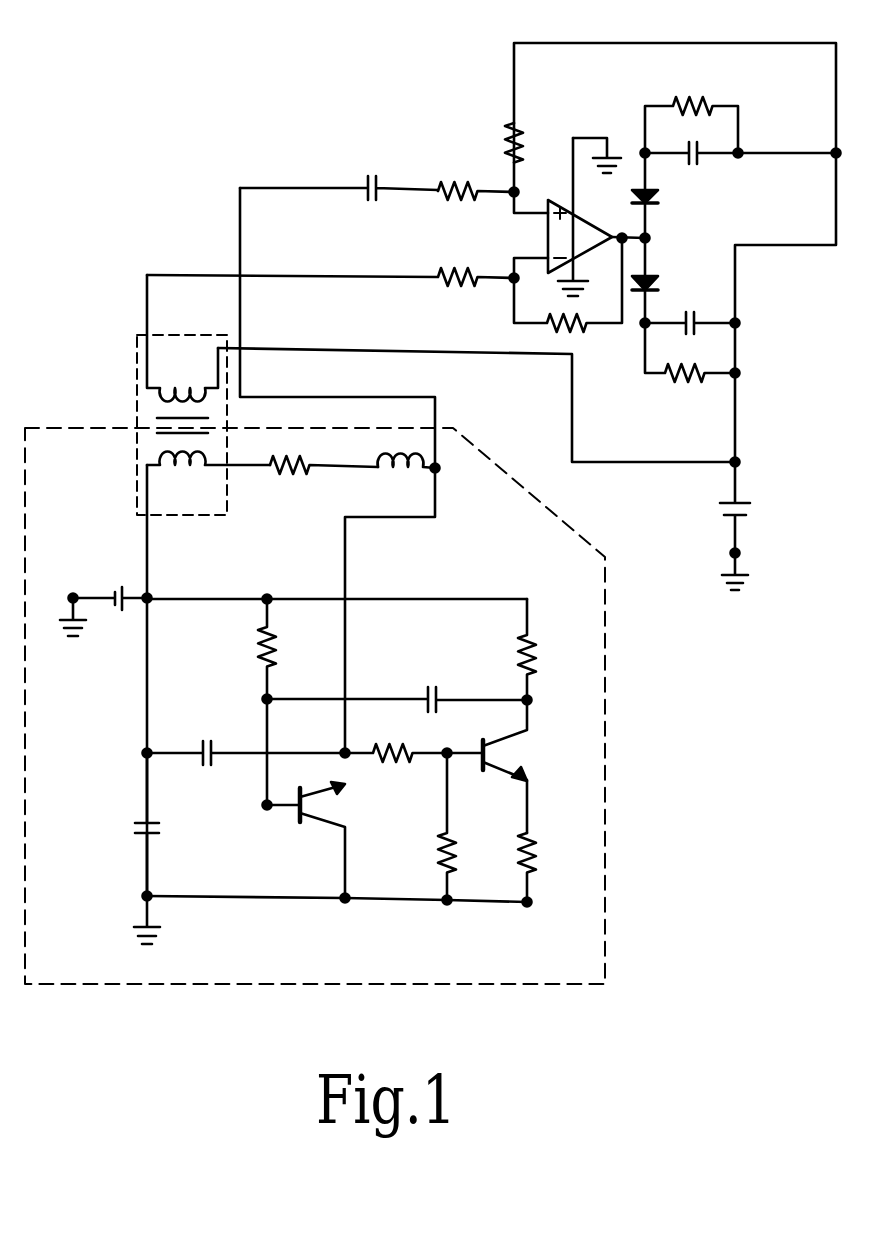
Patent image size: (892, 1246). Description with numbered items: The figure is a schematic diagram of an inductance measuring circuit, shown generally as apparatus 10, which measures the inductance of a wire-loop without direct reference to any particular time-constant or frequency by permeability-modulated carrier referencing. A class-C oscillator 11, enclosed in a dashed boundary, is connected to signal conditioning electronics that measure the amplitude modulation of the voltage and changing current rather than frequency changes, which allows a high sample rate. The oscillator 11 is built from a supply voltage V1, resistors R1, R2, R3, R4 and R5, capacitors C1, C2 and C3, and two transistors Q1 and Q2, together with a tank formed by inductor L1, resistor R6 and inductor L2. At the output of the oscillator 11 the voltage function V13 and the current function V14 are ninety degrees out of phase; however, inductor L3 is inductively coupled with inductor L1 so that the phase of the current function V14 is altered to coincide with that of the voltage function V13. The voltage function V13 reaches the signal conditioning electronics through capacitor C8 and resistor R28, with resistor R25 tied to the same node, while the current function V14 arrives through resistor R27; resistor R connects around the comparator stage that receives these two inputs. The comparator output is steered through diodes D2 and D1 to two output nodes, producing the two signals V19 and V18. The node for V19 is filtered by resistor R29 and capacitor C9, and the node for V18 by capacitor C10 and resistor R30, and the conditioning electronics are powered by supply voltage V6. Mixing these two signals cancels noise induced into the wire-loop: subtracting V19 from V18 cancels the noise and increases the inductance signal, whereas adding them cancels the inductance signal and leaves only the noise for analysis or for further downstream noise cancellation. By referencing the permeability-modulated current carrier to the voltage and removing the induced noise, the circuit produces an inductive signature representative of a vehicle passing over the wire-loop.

The inductance measuring apparatus 10 is at (270, 95).
The class-C oscillator 11 is at (605, 770).
The resistor R25 is at (490, 142).
The voltage function output V13 is at (514, 192).
The capacitor C8 is at (339, 207).
The resistor R28 is at (476, 210).
The current function output V14 is at (514, 278).
The resistor R27 is at (330, 297).
The resistor R is at (568, 298).
The diode D2 is at (666, 195).
The diode D1 is at (666, 280).
The second output signal V19 is at (645, 153).
The resistor R29 is at (691, 107).
The capacitor C9 is at (743, 140).
The first output signal V18 is at (645, 323).
The capacitor C10 is at (692, 339).
The resistor R30 is at (692, 373).
The supply voltage V6 is at (751, 526).
The inductor L3 is at (182, 338).
The inductor L1 is at (208, 478).
The resistor R6 is at (324, 484).
The inductor L2 is at (409, 478).
The supply voltage V1 is at (106, 592).
The resistor R1 is at (285, 649).
The resistor R4 is at (546, 652).
The capacitor C2 is at (397, 685).
The capacitor C1 is at (246, 769).
The capacitor C3 is at (163, 848).
The resistor R2 is at (414, 773).
The transistor Q1 is at (321, 798).
The transistor Q2 is at (527, 766).
The resistor R3 is at (467, 829).
The resistor R5 is at (547, 870).